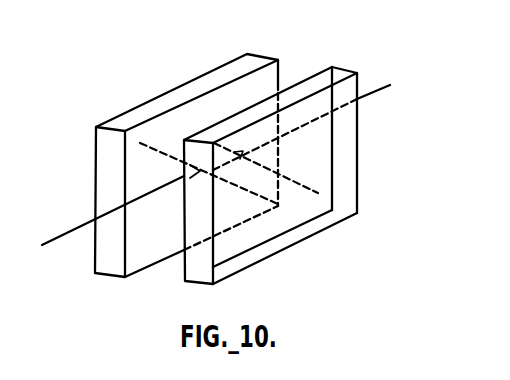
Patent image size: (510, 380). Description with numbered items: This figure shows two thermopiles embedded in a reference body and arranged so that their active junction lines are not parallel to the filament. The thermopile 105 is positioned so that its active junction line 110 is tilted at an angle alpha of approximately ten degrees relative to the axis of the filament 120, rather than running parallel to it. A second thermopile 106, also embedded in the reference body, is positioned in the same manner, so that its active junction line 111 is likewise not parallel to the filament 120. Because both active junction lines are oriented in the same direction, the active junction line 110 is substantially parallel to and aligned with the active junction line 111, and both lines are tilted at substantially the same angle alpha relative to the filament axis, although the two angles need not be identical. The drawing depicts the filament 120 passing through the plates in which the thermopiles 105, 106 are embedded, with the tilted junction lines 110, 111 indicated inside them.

The thermopile 105 is at (136, 172).
The active junction line 110 is at (160, 176).
The thermopile 106 is at (320, 155).
The active junction line 111 is at (292, 177).
The filament 120 is at (390, 85).